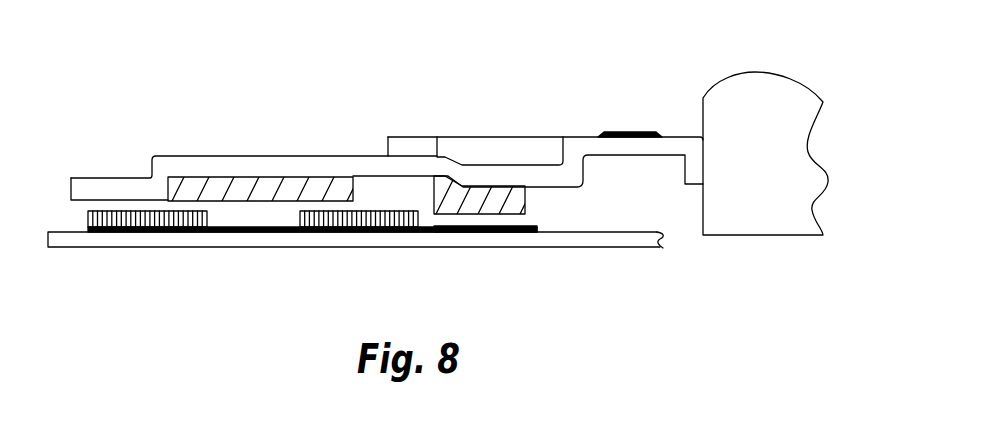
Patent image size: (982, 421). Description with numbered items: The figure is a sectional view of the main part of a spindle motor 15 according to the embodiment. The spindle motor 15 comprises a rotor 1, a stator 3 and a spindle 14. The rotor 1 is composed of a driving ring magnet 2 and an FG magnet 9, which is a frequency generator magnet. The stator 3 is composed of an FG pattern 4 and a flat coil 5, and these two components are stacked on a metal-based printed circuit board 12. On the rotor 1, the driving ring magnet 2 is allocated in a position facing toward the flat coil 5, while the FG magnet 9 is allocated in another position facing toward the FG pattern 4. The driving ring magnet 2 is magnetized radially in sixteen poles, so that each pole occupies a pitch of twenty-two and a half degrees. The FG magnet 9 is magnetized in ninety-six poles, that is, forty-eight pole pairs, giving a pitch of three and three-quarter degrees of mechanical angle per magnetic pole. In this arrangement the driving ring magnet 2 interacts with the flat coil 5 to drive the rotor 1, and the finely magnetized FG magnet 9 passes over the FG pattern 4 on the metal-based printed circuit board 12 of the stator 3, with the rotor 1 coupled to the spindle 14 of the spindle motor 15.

The rotor 1 is at (490, 130).
The driving ring magnet 2 is at (251, 184).
The stator 3 is at (238, 254).
The FG pattern 4 is at (462, 231).
The flat coil 5 is at (162, 217).
The FG magnet 9 is at (502, 205).
The metal-based printed circuit board 12 is at (365, 235).
The spindle 14 is at (756, 84).
The spindle motor 15 is at (168, 58).